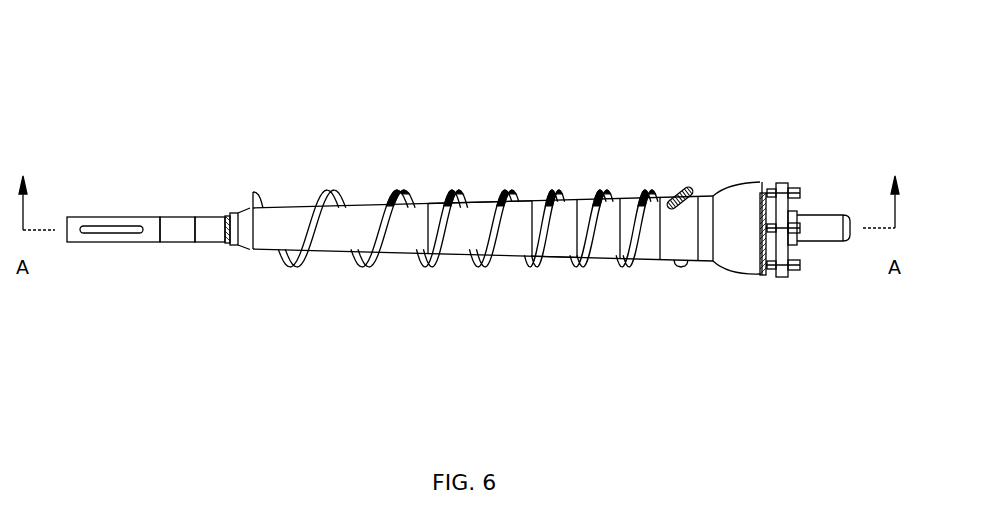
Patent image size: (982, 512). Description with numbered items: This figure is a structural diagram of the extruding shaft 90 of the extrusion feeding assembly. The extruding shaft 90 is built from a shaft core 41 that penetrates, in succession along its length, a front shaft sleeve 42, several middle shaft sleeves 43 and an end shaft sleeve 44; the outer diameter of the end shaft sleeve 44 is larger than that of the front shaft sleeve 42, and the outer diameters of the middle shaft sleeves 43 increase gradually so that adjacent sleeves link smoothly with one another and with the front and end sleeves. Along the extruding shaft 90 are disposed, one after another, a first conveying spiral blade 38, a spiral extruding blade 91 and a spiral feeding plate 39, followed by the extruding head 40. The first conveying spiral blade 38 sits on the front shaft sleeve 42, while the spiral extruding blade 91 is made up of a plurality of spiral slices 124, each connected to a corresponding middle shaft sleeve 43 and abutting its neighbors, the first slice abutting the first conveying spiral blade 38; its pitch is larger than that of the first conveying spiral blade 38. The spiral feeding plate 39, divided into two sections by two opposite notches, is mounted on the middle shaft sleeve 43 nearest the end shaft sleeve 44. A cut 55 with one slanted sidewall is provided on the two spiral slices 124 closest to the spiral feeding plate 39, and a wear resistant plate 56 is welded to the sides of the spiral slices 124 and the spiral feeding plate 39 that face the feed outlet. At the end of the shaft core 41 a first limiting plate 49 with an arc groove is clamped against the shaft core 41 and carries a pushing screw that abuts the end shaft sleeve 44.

The first conveying spiral blade 38 is at (327, 193).
The spiral feeding plate 39 is at (685, 190).
The extruding head 40 is at (728, 215).
The shaft core 41 is at (153, 230).
The front shaft sleeve 42 is at (278, 222).
The middle shaft sleeve 43 is at (565, 240).
The end shaft sleeve 44 is at (705, 253).
The first limiting plate 49 is at (797, 217).
The cut 55 is at (583, 243).
The wear resistant plate 56 is at (447, 198).
The extruding shaft 90 is at (505, 238).
The spiral extruding blade 91 is at (547, 197).
The spiral slice 124 is at (490, 207).